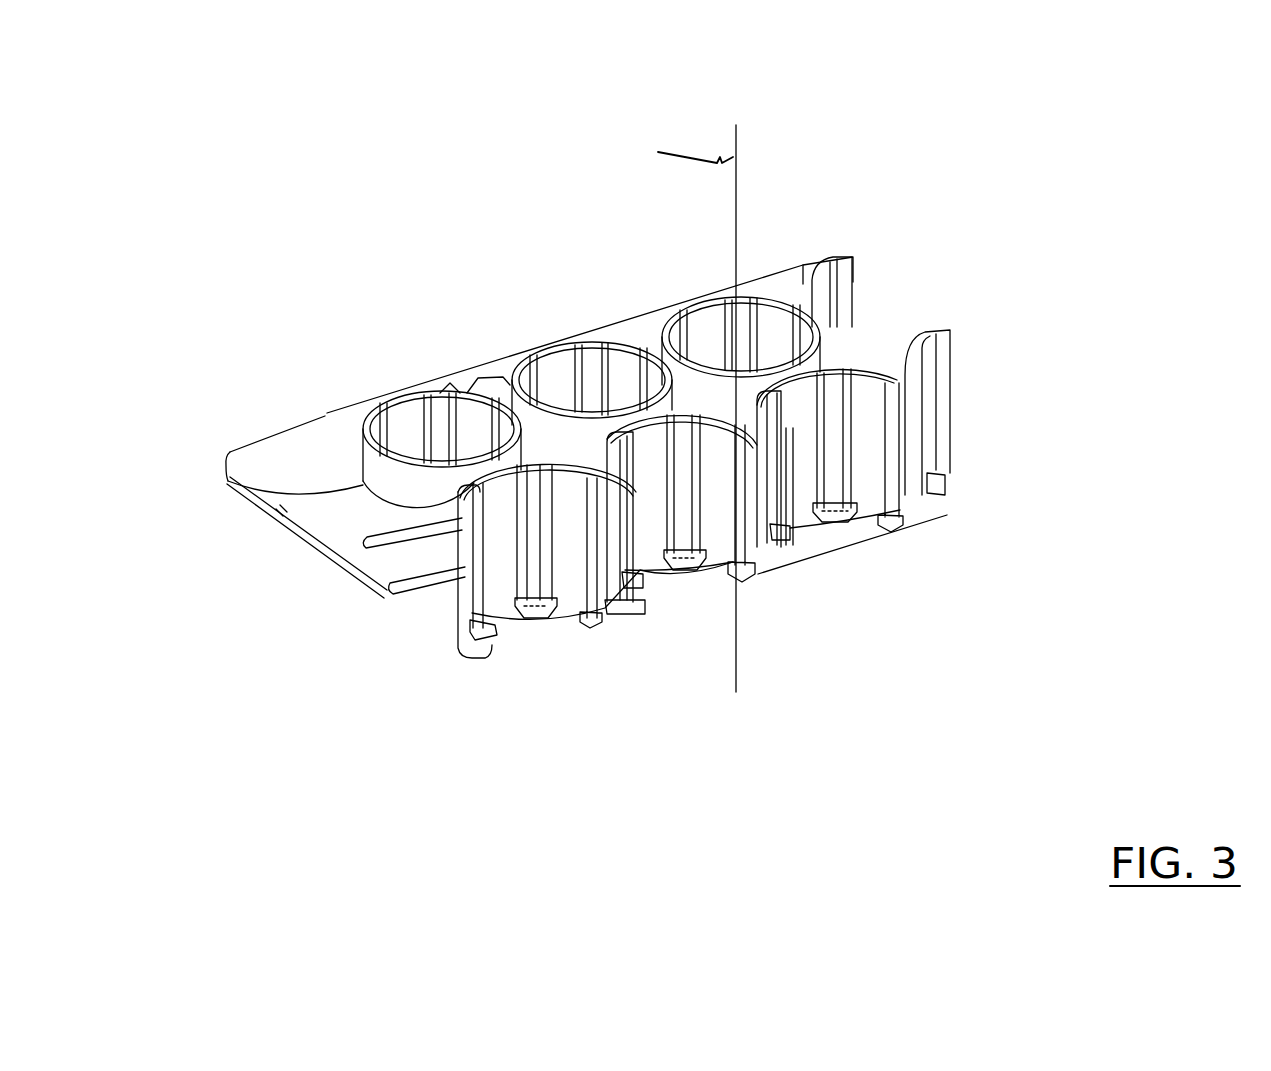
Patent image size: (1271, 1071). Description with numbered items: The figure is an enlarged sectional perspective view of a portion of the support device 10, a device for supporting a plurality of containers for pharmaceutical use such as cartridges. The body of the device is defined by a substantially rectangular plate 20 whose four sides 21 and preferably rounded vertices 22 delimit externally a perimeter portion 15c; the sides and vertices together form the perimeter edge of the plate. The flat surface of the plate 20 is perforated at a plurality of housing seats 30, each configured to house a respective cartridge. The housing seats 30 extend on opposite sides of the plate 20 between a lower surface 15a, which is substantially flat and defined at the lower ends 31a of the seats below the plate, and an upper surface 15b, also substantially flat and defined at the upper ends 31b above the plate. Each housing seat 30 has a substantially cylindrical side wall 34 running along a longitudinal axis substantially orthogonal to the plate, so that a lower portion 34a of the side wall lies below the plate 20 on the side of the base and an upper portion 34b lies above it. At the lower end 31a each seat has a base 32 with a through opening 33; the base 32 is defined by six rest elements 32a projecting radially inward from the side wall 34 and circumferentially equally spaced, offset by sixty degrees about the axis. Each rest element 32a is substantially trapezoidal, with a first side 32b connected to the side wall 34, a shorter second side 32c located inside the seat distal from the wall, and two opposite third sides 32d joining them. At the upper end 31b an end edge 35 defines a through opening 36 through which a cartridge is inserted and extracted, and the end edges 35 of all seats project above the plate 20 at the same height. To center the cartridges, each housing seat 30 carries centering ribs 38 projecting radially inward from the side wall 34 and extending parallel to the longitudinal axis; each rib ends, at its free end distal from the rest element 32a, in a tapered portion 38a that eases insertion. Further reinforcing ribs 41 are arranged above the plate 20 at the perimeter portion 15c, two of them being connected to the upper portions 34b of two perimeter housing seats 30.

The support device 10 is at (922, 143).
The lower surface 15a is at (622, 622).
The upper surface 15b is at (545, 352).
The perimeter portion 15c is at (263, 447).
The plate 20 is at (460, 370).
The side 21 is at (490, 358).
The vertex 22 is at (227, 457).
The housing seat 30 is at (512, 505).
The lower end 31a is at (480, 662).
The upper end 31b is at (860, 368).
The base 32 is at (690, 572).
The rest element 32a is at (883, 525).
The first side 32b is at (535, 606).
The second side 32c is at (537, 613).
The third side 32d is at (523, 613).
The through opening 33 is at (813, 556).
The side wall 34 is at (452, 617).
The lower portion 34a is at (458, 618).
The upper portion 34b is at (463, 570).
The end edge 35 is at (363, 483).
The through opening 36 is at (767, 325).
The centering rib 38 is at (823, 469).
The tapered portion 38a is at (698, 425).
The reinforcing rib 41 is at (463, 537).